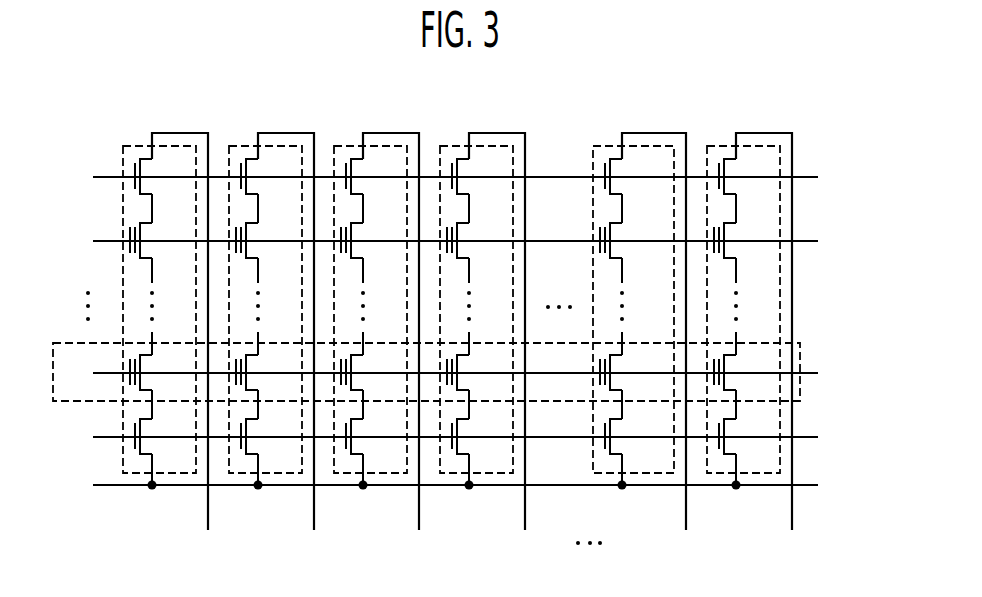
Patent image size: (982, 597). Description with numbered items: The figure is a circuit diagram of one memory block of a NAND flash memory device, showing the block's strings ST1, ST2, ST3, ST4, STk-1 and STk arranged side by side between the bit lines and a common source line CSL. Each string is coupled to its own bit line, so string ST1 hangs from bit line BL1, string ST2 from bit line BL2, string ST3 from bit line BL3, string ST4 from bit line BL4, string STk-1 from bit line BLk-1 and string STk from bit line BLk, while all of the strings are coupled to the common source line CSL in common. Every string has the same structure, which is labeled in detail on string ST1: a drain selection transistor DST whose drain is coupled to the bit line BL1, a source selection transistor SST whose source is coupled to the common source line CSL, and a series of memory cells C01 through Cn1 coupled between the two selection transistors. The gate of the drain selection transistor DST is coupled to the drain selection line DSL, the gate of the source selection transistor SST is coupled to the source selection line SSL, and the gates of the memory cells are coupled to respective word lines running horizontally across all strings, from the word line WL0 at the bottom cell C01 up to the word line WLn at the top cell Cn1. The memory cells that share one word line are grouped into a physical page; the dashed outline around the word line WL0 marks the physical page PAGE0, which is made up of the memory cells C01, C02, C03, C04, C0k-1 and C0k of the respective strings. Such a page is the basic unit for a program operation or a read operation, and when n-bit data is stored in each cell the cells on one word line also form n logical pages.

The string ST1 is at (159, 289).
The string ST2 is at (265, 289).
The string ST3 is at (370, 289).
The string ST4 is at (476, 289).
The string STk-1 is at (633, 289).
The string STk is at (743, 289).
The drain selection transistor DST is at (159, 174).
The source selection transistor SST is at (158, 434).
The memory cell Cn1 is at (154, 238).
The memory cell C01 is at (156, 370).
The memory cell C02 is at (262, 370).
The memory cell C03 is at (367, 370).
The memory cell C04 is at (473, 370).
The memory cell C0k-1 is at (636, 370).
The memory cell C0k is at (741, 370).
The drain selection line DSL is at (440, 178).
The word line WLn is at (440, 242).
The word line WL0 is at (440, 374).
The source selection line SSL is at (440, 438).
The common source line CSL is at (440, 486).
The bit line BL1 is at (186, 346).
The bit line BL2 is at (292, 346).
The bit line BL3 is at (397, 346).
The bit line BL4 is at (503, 346).
The bit line BLk-1 is at (668, 346).
The bit line BLk is at (771, 346).
The physical page PAGE0 is at (800, 345).